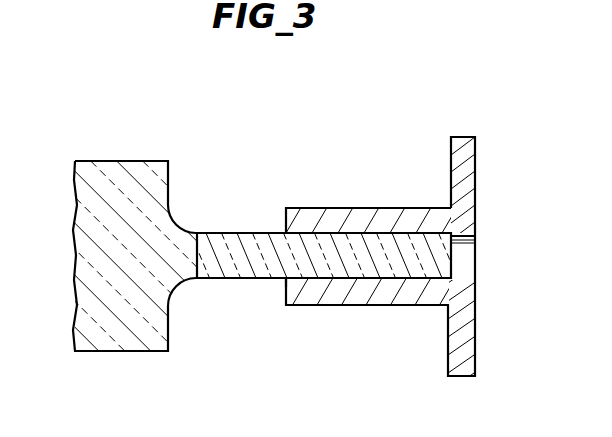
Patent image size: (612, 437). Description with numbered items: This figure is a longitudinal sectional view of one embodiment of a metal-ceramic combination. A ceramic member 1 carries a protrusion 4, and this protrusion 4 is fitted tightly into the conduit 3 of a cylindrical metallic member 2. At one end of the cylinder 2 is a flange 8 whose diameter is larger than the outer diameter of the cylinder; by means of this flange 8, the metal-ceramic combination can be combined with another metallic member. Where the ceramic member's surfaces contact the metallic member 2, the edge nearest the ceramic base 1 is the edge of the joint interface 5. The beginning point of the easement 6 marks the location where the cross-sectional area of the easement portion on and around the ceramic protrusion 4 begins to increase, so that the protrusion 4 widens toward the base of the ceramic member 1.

The ceramic member 1 is at (143, 168).
The cylindrical metallic member 2 is at (396, 298).
The conduit 3 is at (470, 262).
The protrusion 4 is at (343, 241).
The edge of joint interface 5 is at (284, 281).
The beginning point of the easement 6 is at (197, 233).
The flange 8 is at (460, 167).